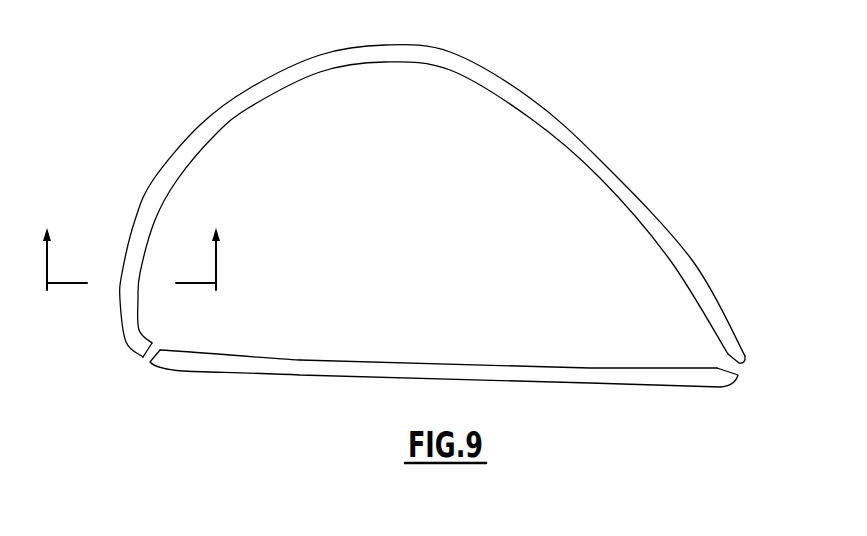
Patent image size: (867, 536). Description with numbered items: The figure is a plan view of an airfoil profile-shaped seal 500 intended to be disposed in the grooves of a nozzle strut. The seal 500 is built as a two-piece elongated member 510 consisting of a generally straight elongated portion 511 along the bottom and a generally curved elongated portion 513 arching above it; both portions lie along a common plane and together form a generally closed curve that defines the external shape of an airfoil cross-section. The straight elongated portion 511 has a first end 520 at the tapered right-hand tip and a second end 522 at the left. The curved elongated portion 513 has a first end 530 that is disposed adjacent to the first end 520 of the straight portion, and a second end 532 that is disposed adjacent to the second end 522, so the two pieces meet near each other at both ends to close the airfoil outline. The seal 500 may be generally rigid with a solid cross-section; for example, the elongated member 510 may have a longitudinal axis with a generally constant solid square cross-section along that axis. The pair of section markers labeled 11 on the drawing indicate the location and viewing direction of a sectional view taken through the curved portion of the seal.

The airfoil profile-shaped seal 500 is at (104, 72).
The two-piece elongated member 510 is at (105, 402).
The straight elongated portion 511 is at (477, 354).
The curved elongated portion 513 is at (301, 49).
The first end of straight elongated portion 520 is at (683, 388).
The second end of straight elongated portion 522 is at (216, 355).
The first end of curved elongated portion 530 is at (723, 303).
The second end of curved elongated portion 532 is at (563, 147).
The section line 11- 11 is at (130, 244).